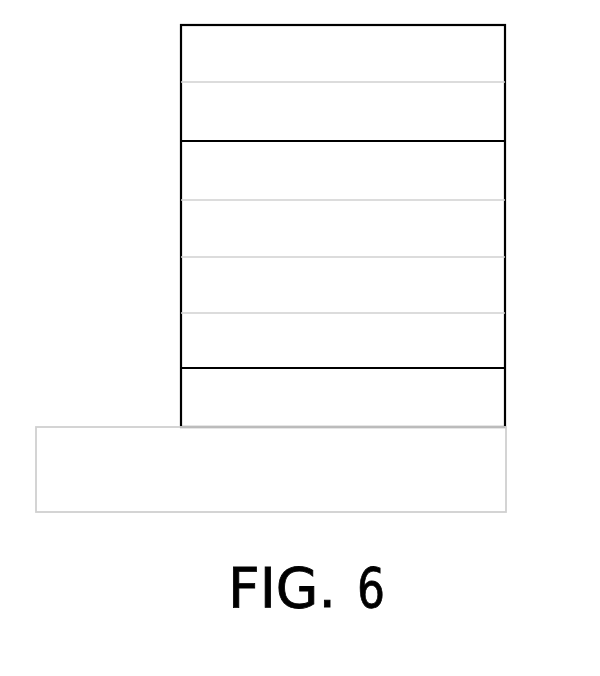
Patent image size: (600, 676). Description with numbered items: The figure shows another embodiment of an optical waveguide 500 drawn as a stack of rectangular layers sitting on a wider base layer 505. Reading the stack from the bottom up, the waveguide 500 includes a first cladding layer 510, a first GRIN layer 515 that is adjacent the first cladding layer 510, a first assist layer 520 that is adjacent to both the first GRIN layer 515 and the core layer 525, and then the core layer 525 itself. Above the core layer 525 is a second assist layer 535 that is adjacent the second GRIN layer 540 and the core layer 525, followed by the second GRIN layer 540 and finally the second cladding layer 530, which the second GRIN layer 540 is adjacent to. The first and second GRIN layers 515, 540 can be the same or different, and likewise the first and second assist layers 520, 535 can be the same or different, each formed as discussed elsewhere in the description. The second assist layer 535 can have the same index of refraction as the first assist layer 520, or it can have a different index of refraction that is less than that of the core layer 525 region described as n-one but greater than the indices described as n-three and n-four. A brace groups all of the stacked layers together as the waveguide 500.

The waveguide 500 is at (145, 33).
The substrate 505 is at (306, 489).
The first cladding layer 510 is at (378, 416).
The first GRIN layer 515 is at (378, 359).
The first assist layer 520 is at (378, 303).
The core layer 525 is at (378, 246).
The second assist layer 535 is at (378, 191).
The second GRIN layer 540 is at (378, 129).
The second cladding layer 530 is at (378, 71).